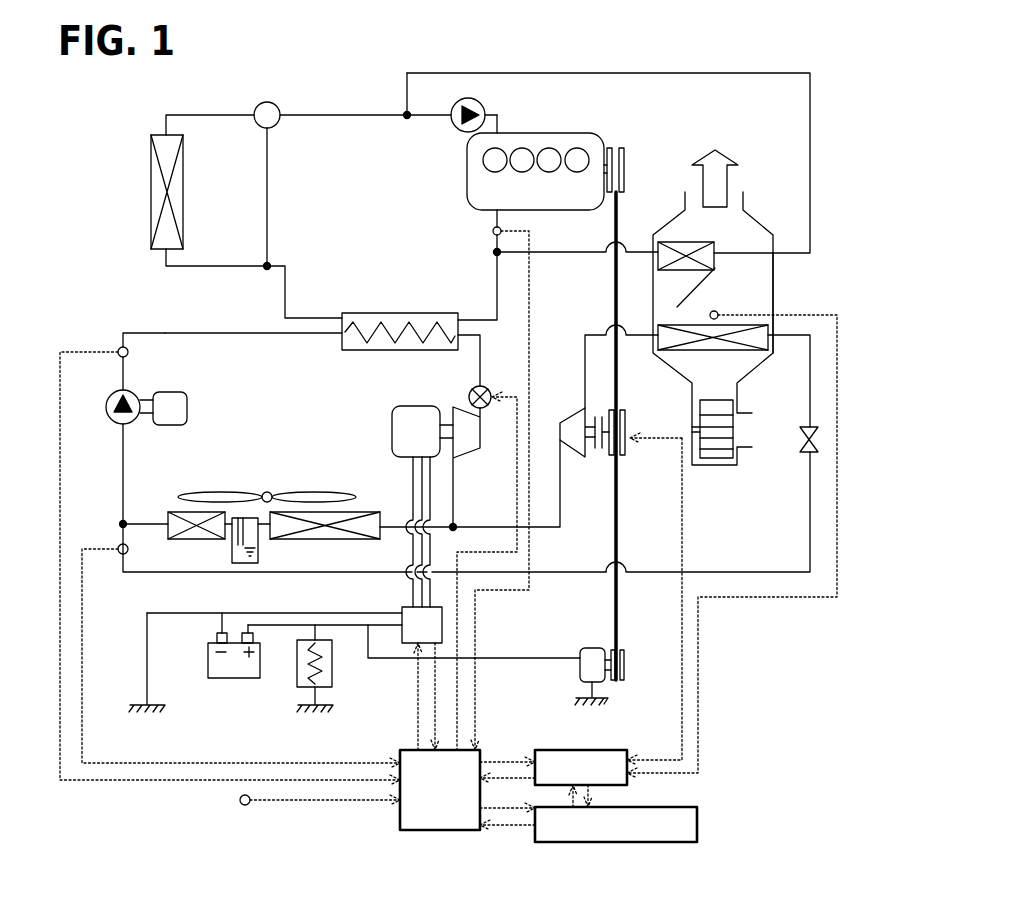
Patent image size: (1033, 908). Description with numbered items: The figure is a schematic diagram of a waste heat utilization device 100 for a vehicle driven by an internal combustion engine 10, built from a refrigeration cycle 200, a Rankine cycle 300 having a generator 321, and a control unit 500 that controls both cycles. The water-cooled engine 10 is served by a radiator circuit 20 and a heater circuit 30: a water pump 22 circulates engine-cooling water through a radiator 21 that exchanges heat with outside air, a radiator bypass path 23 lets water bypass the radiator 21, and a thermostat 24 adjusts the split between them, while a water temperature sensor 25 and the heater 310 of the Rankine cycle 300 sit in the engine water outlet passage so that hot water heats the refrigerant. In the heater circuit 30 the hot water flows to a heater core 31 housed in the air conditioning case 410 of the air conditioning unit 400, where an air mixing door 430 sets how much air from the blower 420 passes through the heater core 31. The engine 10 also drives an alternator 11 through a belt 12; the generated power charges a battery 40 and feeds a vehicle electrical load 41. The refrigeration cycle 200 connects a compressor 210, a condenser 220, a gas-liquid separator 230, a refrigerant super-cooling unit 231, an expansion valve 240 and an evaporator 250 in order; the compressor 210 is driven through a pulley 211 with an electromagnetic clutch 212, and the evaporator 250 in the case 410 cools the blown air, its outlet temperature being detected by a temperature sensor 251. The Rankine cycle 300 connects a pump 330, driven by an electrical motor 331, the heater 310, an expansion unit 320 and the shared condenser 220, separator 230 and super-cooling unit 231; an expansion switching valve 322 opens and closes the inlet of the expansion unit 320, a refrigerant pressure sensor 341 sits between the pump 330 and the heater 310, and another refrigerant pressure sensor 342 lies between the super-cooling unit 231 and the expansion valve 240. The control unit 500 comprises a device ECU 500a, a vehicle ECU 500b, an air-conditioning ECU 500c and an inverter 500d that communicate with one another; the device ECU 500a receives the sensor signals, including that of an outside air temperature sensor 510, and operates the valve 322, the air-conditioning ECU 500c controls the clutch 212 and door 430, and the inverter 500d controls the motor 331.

The internal combustion engine 10 is at (467, 165).
The alternator 11 is at (591, 647).
The belt 12 is at (612, 272).
The radiator circuit 20 is at (347, 104).
The radiator 21 is at (151, 192).
The water pump 22 is at (487, 103).
The radiator bypass path 23 is at (270, 190).
The thermostat 24 is at (267, 102).
The water temperature sensor 25 is at (493, 231).
The heater circuit 30 is at (565, 63).
The heater core 31 is at (684, 242).
The battery 40 is at (235, 680).
The vehicle electrical load 41 is at (332, 665).
The waste heat utilization device 100 is at (119, 320).
The refrigeration cycle 200 is at (577, 341).
The compressor 210 is at (574, 411).
The pulley 211 is at (628, 413).
The electromagnetic clutch 212 is at (598, 451).
The condenser 220 is at (344, 541).
The gas-liquid separator 230 is at (259, 555).
The refrigerant super-cooling unit 231 is at (207, 540).
The expansion valve 240 is at (801, 446).
The evaporator 250 is at (745, 352).
The temperature sensor 251 is at (717, 311).
The Rankine cycle 300 is at (169, 322).
The heater 310 is at (404, 312).
The expansion unit 320 is at (456, 406).
The generator 321 is at (407, 405).
The expansion switching valve 322 is at (489, 386).
The pump 330 is at (140, 424).
The electrical motor 331 is at (187, 408).
The refrigerant pressure sensor 341 is at (129, 352).
The refrigerant pressure sensor 342 is at (118, 544).
The air conditioning unit 400 is at (784, 273).
The air conditioning case 410 is at (775, 299).
The blower 420 is at (716, 466).
The air mixing door 430 is at (703, 284).
The control unit 500 is at (413, 734).
The device ECU 500a is at (431, 832).
The vehicle ECU 500b is at (545, 843).
The air-conditioning ECU 500c is at (540, 750).
The inverter 500d is at (402, 611).
The outside air temperature sensor 510 is at (245, 806).